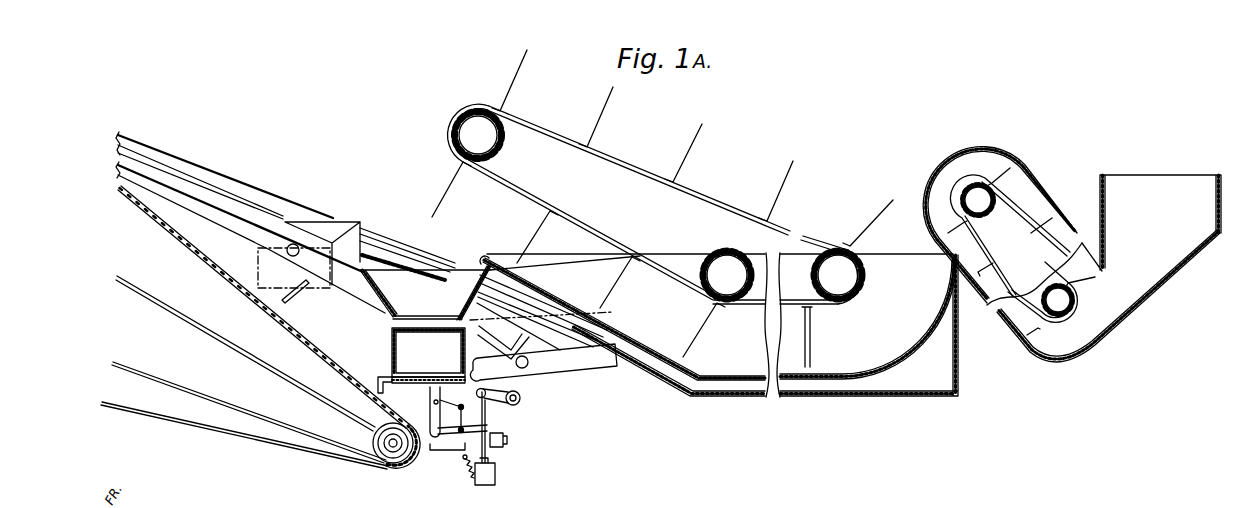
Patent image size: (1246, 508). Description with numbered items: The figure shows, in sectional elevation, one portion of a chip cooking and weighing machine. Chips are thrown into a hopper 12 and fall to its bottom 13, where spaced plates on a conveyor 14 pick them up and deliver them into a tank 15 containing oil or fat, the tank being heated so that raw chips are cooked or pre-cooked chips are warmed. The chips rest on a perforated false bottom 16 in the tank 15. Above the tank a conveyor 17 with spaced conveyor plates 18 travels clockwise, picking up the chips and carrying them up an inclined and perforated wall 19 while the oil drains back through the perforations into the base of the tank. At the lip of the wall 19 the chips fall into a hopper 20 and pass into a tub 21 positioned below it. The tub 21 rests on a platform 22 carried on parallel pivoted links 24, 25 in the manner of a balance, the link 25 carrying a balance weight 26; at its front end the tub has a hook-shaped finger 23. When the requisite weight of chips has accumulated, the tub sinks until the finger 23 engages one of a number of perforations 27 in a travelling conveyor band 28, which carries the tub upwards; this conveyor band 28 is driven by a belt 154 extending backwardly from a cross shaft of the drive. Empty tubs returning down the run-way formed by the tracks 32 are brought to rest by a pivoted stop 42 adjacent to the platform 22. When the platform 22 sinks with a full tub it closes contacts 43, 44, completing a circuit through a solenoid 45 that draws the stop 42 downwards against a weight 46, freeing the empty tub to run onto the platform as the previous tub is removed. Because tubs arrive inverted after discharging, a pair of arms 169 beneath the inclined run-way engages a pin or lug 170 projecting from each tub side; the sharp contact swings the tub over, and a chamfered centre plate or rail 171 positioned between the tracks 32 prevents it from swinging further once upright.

The hopper 12 is at (1216, 208).
The bottom of the hopper 13 is at (1056, 362).
The conveyor 14 is at (1043, 227).
The tank 15 is at (959, 376).
The perforated false bottom 16 is at (877, 371).
The conveyor 17 is at (722, 193).
The conveyor plates 18 is at (780, 202).
The inclined and perforated wall 19 is at (634, 336).
The hopper 20 is at (447, 290).
The tub 21 is at (392, 337).
The platform 22 is at (419, 384).
The hook-shaped finger 23 is at (380, 383).
The pivoted link 24 is at (462, 403).
The pivoted link 25 is at (490, 428).
The balance weight 26 is at (503, 440).
The perforations 27 is at (323, 359).
The conveyor band 28 is at (218, 340).
The tracks 32 is at (229, 208).
The pivoted stop 42 is at (537, 372).
The contact 43 is at (457, 452).
The contact 44 is at (466, 463).
The solenoid 45 is at (496, 477).
The weight 46 is at (520, 399).
The belt 154 is at (195, 423).
The arms 169 is at (293, 287).
The pin or lug 170 is at (294, 266).
The centre plate or rail 171 is at (373, 263).